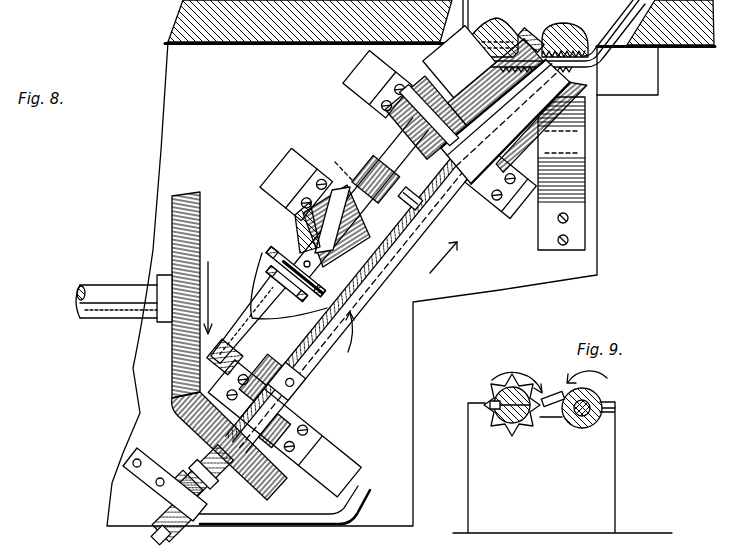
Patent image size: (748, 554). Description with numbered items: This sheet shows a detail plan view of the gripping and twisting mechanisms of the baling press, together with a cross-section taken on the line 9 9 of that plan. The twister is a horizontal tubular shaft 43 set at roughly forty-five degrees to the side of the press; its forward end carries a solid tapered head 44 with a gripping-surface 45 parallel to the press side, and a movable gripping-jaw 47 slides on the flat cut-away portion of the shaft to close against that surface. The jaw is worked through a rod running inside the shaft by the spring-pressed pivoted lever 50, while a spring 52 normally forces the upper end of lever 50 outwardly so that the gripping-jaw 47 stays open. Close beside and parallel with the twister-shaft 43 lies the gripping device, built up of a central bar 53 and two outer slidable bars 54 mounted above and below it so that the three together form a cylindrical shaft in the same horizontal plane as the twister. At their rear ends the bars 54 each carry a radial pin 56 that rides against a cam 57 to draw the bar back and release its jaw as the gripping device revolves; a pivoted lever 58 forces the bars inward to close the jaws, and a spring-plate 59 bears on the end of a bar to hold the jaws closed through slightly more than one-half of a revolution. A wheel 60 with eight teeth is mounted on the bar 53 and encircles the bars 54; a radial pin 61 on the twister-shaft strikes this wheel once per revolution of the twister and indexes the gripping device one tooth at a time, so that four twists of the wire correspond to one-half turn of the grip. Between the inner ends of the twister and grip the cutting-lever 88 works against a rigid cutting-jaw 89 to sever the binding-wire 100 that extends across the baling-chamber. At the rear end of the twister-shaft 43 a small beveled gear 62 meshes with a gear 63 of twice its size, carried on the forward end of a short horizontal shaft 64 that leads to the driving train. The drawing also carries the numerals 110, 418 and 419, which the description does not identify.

In FIG. 8, the binding-wire 100 is at (450, 10).
In FIG. 8, the cutting-lever 88 is at (520, 57).
In FIG. 8, the rigid cutting-jaw 89 is at (545, 36).
In FIG. 8, the central bar 53 is at (494, 37).
In FIG. 9, the central bar 53 is at (497, 409).
In FIG. 8, the solid tapered head 44 is at (585, 58).
In FIG. 8, the gripping-surface 45 is at (597, 68).
In FIG. 8, the outer slidable bars 54 is at (419, 144).
In FIG. 9, the outer slidable bars 54 is at (492, 399).
In FIG. 8, the movable gripping-jaw 47 is at (541, 123).
In FIG. 8, the guide plate 110 is at (561, 173).
In FIG. 8, the wheel 60 is at (360, 165).
In FIG. 9, the wheel 60 is at (494, 375).
In FIG. 8, the section line 9 is at (393, 250).
In FIG. 8, the radial pin 61 is at (412, 203).
In FIG. 9, the radial pin 61 is at (555, 393).
In FIG. 8, the tubular shaft 43 is at (457, 205).
In FIG. 9, the tubular shaft 43 is at (603, 389).
In FIG. 8, the beveled gear 63 is at (173, 207).
In FIG. 8, the cam 57 is at (287, 220).
In FIG. 8, the radial pin 56 is at (300, 237).
In FIG. 8, the spring-plate 59 is at (268, 250).
In FIG. 8, the pivoted lever 58 is at (257, 317).
In FIG. 8, the short horizontal shaft 64 is at (102, 289).
In FIG. 8, the small beveled gear 62 is at (285, 470).
In FIG. 8, the pinion shaft 418 is at (228, 457).
In FIG. 9, the pinion shaft 418 is at (603, 411).
In FIG. 8, the spring-pressed pivoted lever 50 is at (165, 497).
In FIG. 8, the nut 419 is at (190, 527).
In FIG. 8, the spring 52 is at (291, 505).